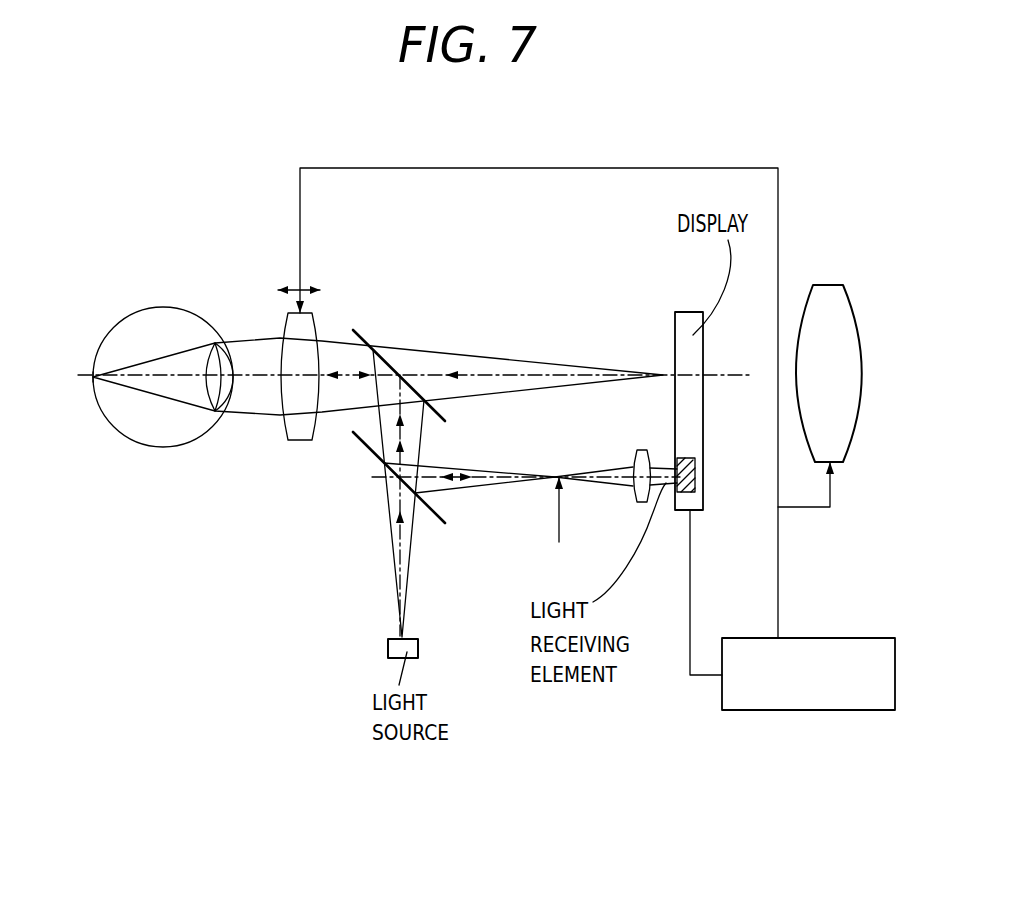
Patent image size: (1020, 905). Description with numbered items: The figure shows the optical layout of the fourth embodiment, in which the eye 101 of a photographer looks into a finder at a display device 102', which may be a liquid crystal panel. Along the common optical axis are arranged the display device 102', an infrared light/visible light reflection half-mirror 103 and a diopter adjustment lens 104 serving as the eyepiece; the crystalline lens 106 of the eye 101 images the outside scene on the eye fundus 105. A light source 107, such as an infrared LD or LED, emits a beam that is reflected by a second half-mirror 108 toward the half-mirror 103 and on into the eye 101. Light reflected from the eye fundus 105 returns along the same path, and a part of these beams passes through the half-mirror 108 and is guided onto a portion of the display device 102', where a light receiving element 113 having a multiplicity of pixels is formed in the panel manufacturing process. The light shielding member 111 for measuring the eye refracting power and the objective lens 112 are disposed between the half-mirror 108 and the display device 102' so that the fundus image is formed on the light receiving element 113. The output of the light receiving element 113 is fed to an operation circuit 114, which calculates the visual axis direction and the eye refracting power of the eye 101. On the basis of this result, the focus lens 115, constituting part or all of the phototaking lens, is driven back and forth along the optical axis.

The eye 101 is at (167, 320).
The display device 102' is at (671, 381).
The infrared light/visible light reflection half-mirror 103 is at (362, 328).
The diopter adjustment lens 104 is at (320, 333).
The eye fundus 105 is at (93, 388).
The crystalline lens 106 is at (203, 409).
The light source 107 is at (390, 648).
The half-mirror 108 is at (440, 512).
The light shielding member 111 is at (558, 515).
The objective lens 112 is at (640, 493).
The light receiving element 113 is at (680, 492).
The operation circuit 114 is at (750, 710).
The focus lens 115 is at (845, 420).